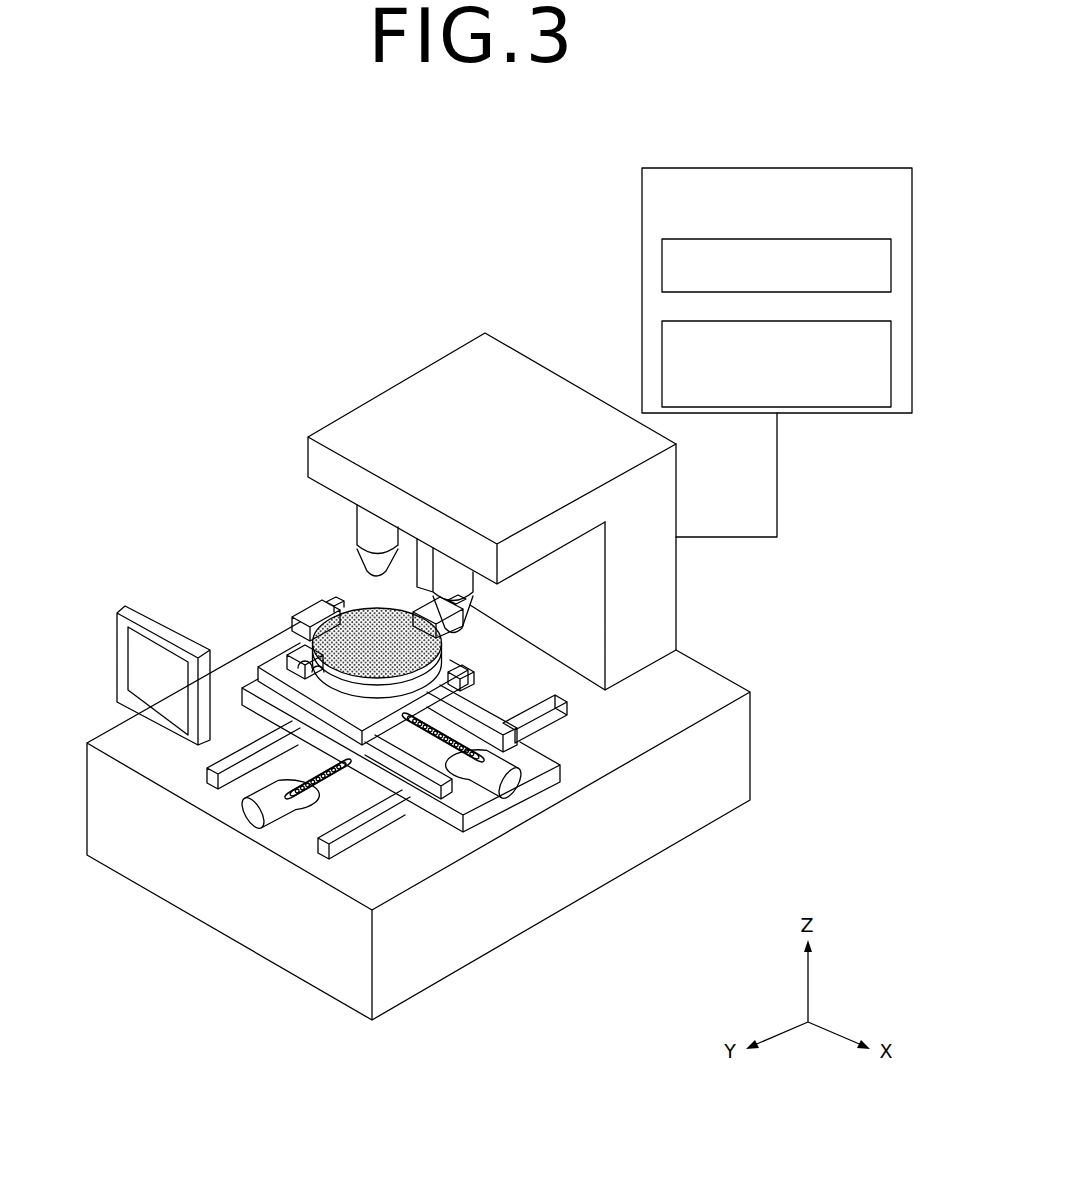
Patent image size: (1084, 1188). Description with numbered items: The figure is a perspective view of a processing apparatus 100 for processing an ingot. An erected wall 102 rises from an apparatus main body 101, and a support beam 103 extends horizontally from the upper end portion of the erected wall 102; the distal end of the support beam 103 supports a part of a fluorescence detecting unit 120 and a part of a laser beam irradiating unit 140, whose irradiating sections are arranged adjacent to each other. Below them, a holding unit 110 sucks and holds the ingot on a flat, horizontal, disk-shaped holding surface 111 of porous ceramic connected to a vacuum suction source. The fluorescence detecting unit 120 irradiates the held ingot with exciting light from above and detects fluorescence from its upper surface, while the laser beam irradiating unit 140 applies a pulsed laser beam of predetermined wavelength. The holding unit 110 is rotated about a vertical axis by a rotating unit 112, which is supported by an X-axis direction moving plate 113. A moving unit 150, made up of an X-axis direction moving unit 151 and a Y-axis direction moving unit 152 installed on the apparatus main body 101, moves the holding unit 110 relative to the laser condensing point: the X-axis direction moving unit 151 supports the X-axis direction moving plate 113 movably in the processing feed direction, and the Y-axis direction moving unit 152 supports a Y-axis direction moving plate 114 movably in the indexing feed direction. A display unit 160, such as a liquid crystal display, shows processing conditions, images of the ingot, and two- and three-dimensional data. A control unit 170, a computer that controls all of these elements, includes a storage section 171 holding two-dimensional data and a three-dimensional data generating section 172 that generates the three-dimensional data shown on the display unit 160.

The processing apparatus 100 is at (236, 182).
The apparatus main body 101 is at (422, 975).
The erected wall 102 is at (666, 556).
The support beam 103 is at (387, 405).
The holding unit 110 is at (325, 589).
The holding surface 111 is at (284, 630).
The rotating unit 112 is at (378, 700).
The X-axis direction moving plate 113 is at (350, 705).
The Y-axis direction moving plate 114 is at (484, 800).
The fluorescence detecting unit 120 is at (492, 596).
The laser beam irradiating unit 140 is at (345, 526).
The moving unit 150 is at (228, 1022).
The X-axis direction moving unit 151 is at (427, 831).
The Y-axis direction moving unit 152 is at (301, 816).
The display unit 160 is at (138, 647).
The control unit 170 is at (857, 168).
The storage section 171 is at (843, 239).
The three-dimensional data generating section 172 is at (843, 321).